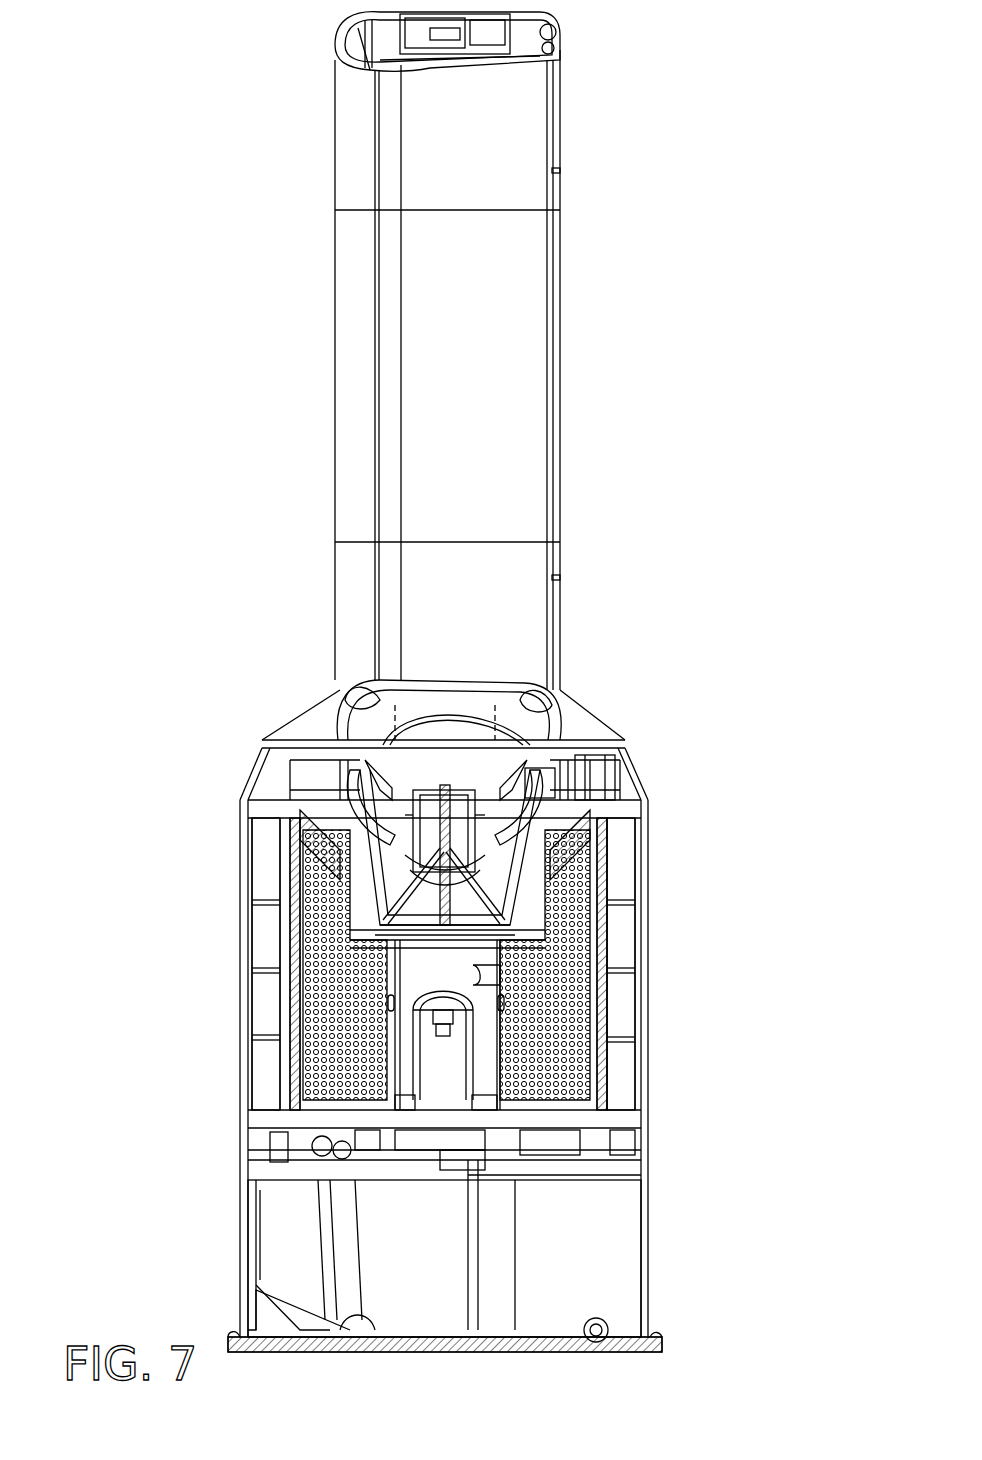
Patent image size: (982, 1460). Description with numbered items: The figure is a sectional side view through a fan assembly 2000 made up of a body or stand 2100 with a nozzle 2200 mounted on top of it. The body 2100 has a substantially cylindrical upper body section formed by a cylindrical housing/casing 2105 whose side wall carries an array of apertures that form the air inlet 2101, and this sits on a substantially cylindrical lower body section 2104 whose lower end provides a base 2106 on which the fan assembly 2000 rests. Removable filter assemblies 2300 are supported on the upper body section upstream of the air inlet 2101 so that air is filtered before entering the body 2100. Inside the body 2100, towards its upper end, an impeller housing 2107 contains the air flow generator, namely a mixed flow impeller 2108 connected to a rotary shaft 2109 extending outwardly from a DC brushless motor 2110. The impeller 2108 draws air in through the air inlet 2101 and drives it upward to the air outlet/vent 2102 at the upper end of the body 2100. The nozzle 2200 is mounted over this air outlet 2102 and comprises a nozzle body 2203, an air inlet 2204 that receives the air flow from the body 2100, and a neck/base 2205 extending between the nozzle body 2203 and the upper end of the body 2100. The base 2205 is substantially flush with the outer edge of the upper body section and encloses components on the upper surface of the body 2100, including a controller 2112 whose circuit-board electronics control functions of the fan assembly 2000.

The fan assembly 2000 is at (288, 110).
The nozzle 2200 is at (340, 330).
The nozzle body 2203 is at (340, 560).
The air inlet 2204 is at (450, 705).
The neck/base 2205 is at (585, 720).
The motor 2110 is at (400, 900).
The rotary shaft 2109 is at (420, 850).
The impeller 2108 is at (310, 880).
The controller 2112 is at (590, 775).
The air outlet/vent 2102 is at (545, 765).
The body 2100 is at (300, 950).
The air inlet 2101 is at (310, 1025).
The filter assemblies 2300 is at (262, 1058).
The impeller housing 2107 is at (540, 905).
The housing/casing 2105 is at (592, 990).
The lower body section 2104 is at (240, 1200).
The base 2106 is at (630, 1345).